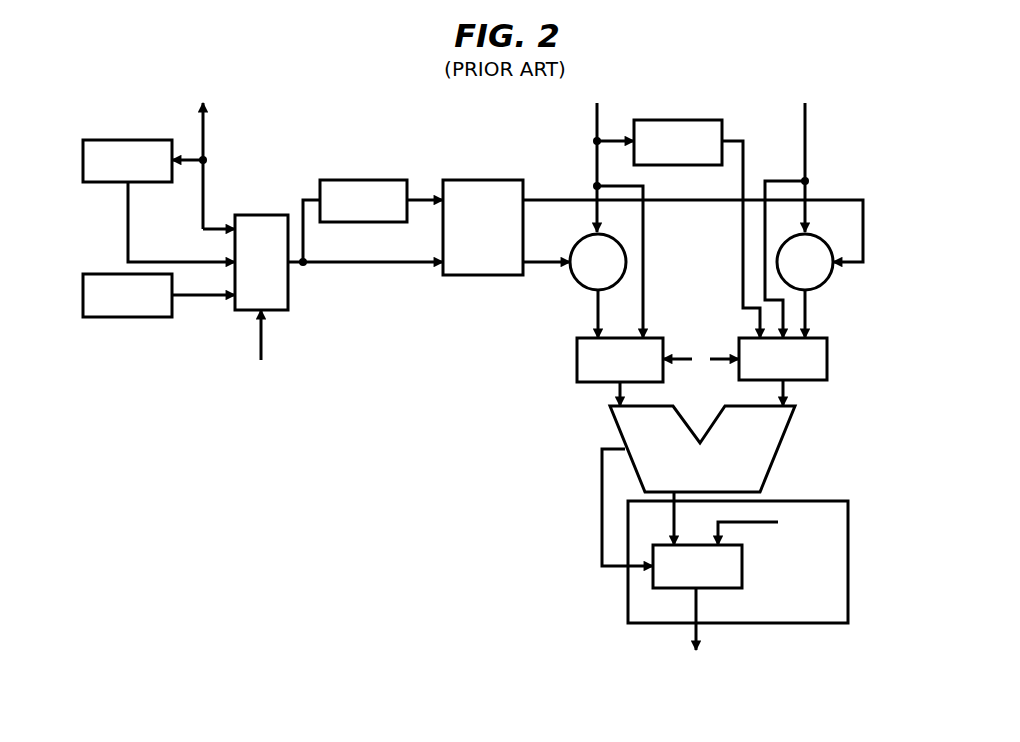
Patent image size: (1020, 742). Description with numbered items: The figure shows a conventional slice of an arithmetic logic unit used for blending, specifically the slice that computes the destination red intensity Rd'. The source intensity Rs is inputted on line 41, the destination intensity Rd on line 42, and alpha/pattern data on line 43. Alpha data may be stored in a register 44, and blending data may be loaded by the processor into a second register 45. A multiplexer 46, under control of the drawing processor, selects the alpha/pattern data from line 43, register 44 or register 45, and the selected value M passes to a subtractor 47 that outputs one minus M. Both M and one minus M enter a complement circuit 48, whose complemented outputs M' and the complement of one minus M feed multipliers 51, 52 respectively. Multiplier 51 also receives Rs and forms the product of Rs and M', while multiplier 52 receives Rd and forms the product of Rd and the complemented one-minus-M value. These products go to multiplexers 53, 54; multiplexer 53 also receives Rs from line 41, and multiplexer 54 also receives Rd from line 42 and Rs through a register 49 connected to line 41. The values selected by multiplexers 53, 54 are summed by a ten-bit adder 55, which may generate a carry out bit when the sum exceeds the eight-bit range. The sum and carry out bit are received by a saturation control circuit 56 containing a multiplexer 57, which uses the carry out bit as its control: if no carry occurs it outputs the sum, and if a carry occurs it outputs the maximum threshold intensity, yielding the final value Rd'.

The line 41 is at (597, 128).
The line 42 is at (805, 150).
The line 43 is at (203, 125).
The register 44 is at (110, 140).
The second register 45 is at (125, 317).
The multiplexer 46 is at (255, 215).
The subtractor 47 is at (358, 180).
The complement circuit 48 is at (480, 180).
The register 49 is at (690, 120).
The multiplier 51 is at (575, 282).
The multiplier 52 is at (828, 280).
The multiplexer 53 is at (577, 359).
The multiplexer 54 is at (827, 359).
The adder 55 is at (790, 428).
The saturation control circuit 56 is at (848, 556).
The multiplexer 57 is at (653, 580).